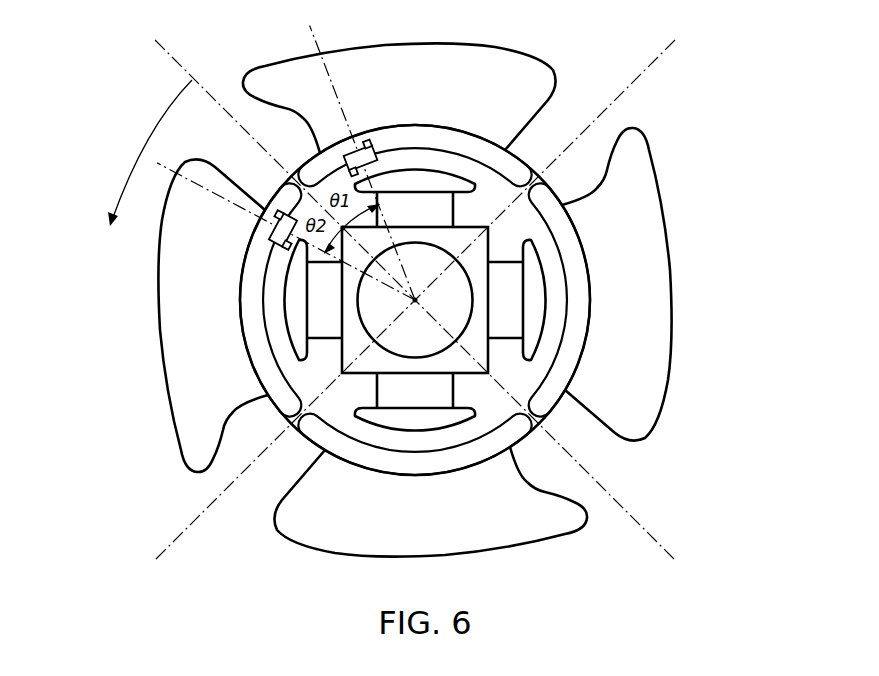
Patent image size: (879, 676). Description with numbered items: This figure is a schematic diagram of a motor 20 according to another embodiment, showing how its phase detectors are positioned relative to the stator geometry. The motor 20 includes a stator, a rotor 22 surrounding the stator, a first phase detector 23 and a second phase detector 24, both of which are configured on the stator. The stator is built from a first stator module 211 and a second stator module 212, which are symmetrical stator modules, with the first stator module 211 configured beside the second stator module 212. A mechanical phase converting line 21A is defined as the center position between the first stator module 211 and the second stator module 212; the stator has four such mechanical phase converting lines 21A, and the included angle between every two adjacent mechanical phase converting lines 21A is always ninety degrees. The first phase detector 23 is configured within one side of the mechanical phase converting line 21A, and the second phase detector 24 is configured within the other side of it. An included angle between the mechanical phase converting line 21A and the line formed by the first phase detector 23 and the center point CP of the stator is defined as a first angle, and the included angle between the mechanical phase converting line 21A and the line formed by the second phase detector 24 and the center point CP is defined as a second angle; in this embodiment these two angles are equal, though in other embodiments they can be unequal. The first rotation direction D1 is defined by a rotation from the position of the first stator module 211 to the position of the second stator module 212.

The motor 20 is at (698, 156).
The mechanical phase converting line 21A is at (160, 50).
The rotor 22 is at (447, 138).
The first phase detector 23 is at (359, 140).
The second phase detector 24 is at (276, 229).
The first stator module 211 is at (445, 180).
The second stator module 212 is at (293, 283).
The center point CP is at (433, 300).
The first rotation direction D1 is at (141, 153).